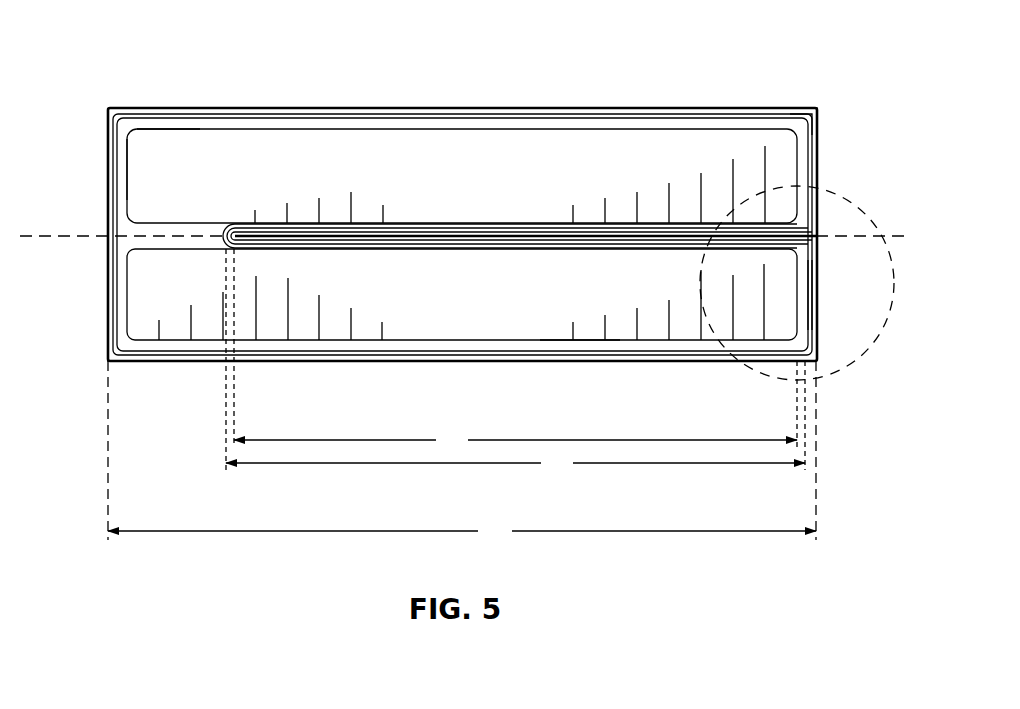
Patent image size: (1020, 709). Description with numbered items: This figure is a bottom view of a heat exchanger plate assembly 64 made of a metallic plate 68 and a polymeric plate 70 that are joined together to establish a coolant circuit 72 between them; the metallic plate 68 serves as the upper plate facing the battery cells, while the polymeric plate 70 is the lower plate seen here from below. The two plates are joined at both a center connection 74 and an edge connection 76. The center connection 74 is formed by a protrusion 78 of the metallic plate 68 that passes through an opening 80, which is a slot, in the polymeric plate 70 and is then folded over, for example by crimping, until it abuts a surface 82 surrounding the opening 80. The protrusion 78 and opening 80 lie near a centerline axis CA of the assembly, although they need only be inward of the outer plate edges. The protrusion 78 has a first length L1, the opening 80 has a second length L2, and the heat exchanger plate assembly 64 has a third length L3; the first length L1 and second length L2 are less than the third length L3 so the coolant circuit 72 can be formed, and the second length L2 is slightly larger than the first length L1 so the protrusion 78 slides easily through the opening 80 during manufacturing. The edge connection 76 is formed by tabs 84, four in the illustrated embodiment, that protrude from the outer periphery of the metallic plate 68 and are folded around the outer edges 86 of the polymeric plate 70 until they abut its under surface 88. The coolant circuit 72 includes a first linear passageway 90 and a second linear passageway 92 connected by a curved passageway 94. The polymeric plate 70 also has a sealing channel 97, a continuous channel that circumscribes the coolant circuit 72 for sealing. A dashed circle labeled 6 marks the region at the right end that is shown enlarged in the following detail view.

The heat exchanger plate assembly 64 is at (713, 75).
The tabs 84 is at (170, 108).
The edge connection 76 is at (823, 104).
The outer edges 86 is at (814, 108).
The metallic plate 68 is at (102, 366).
The under surface 88 is at (652, 361).
The second linear passageway 92 is at (556, 158).
The curved passageway 94 is at (158, 190).
The coolant circuit 72 is at (414, 325).
The first linear passageway 90 is at (556, 310).
The protrusion 78 is at (360, 224).
The opening 80 is at (447, 224).
The center connection 74 is at (596, 218).
The surface 82 is at (662, 225).
The polymeric plate 70 is at (273, 320).
The sealing channel 97 is at (810, 312).
The detail circle FIG. 6 is at (865, 218).
The centerline axis CA is at (87, 237).
The first length L1 is at (515, 353).
The second length L2 is at (515, 365).
The third length L3 is at (462, 455).